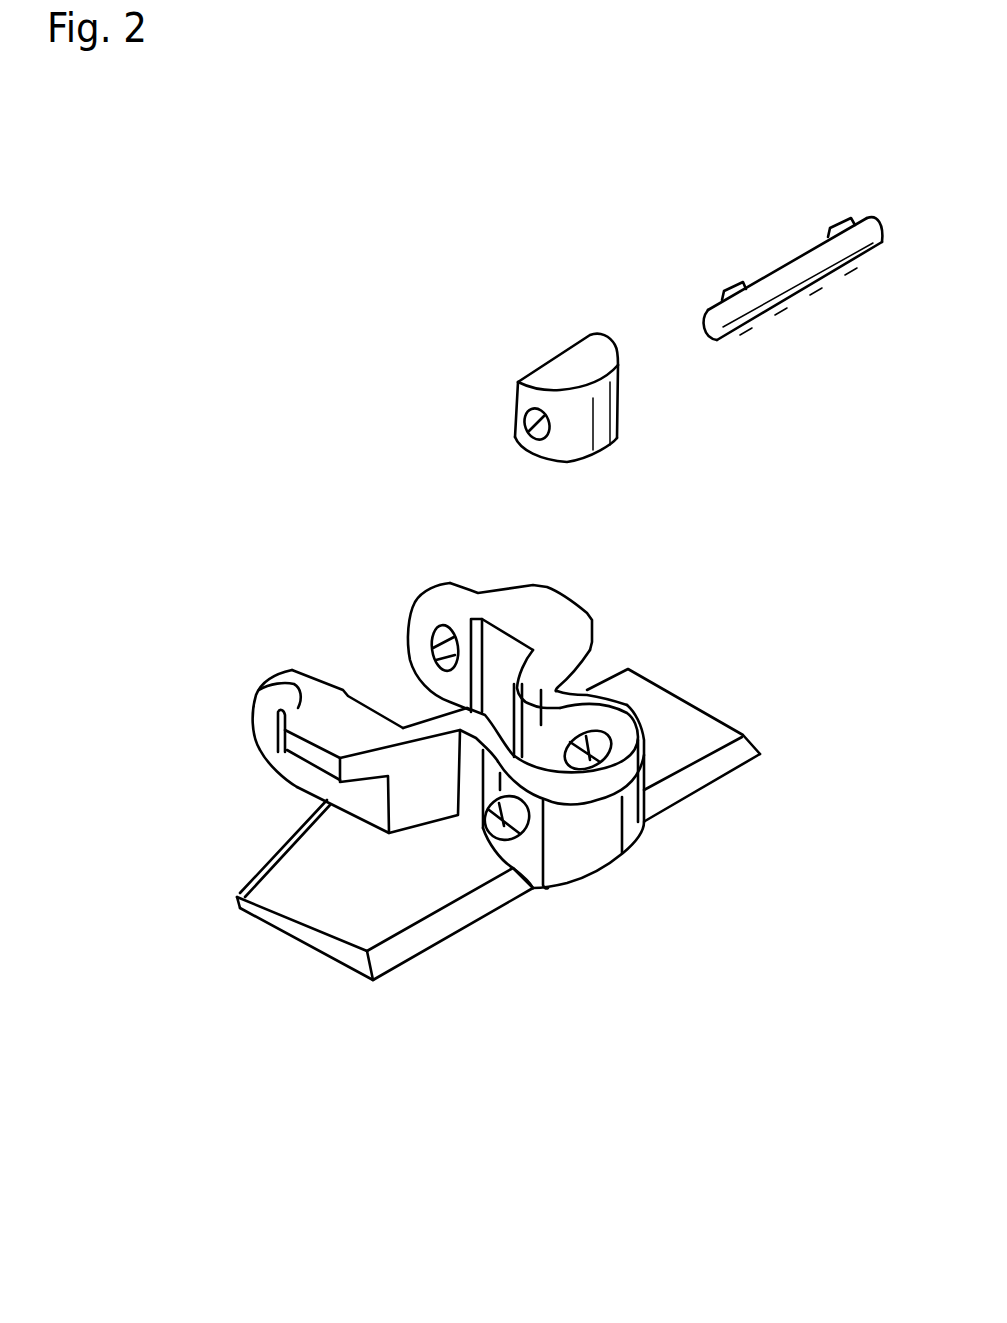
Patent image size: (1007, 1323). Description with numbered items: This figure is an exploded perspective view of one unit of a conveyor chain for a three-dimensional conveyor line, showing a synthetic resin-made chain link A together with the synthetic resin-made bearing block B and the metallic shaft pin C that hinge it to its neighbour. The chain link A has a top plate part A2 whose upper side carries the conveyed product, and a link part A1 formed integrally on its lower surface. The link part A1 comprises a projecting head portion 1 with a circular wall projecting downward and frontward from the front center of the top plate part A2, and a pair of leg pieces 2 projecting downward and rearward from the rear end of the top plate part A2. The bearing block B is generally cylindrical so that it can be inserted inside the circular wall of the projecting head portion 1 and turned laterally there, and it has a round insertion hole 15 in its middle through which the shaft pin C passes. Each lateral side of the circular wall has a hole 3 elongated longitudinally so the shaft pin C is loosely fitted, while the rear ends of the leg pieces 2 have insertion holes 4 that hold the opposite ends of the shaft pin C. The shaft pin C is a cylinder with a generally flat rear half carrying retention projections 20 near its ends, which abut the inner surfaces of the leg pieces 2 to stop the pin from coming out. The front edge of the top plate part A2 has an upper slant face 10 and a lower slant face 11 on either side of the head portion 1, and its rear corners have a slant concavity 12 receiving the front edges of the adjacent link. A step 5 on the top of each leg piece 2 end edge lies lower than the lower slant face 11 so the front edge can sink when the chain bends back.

The chain link A is at (533, 889).
The link part A1 is at (590, 689).
The top plate part A2 is at (333, 893).
The projecting head portion 1 is at (597, 842).
The leg pieces 2 is at (418, 616).
The elongated hole 3 is at (620, 727).
The insertion hole 4 is at (432, 652).
The step 5 is at (293, 787).
The upper slant face 10 is at (368, 951).
The lower slant face 11 is at (450, 922).
The slant concavity 12 is at (245, 889).
The round insertion hole 15 is at (532, 435).
The retention projections 20 is at (840, 226).
The bearing block B is at (515, 402).
The shaft pin C is at (780, 287).